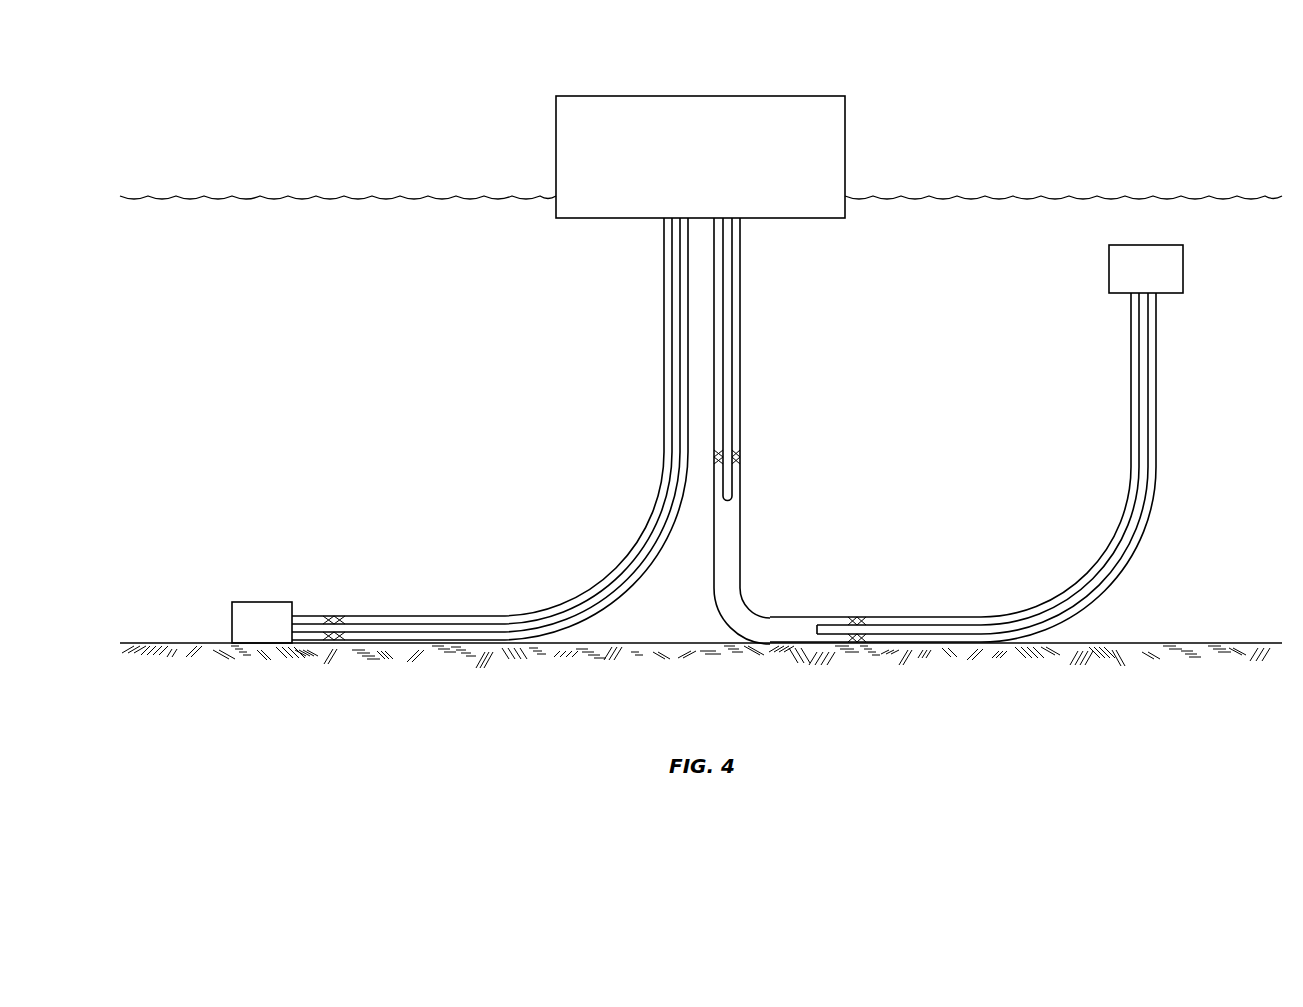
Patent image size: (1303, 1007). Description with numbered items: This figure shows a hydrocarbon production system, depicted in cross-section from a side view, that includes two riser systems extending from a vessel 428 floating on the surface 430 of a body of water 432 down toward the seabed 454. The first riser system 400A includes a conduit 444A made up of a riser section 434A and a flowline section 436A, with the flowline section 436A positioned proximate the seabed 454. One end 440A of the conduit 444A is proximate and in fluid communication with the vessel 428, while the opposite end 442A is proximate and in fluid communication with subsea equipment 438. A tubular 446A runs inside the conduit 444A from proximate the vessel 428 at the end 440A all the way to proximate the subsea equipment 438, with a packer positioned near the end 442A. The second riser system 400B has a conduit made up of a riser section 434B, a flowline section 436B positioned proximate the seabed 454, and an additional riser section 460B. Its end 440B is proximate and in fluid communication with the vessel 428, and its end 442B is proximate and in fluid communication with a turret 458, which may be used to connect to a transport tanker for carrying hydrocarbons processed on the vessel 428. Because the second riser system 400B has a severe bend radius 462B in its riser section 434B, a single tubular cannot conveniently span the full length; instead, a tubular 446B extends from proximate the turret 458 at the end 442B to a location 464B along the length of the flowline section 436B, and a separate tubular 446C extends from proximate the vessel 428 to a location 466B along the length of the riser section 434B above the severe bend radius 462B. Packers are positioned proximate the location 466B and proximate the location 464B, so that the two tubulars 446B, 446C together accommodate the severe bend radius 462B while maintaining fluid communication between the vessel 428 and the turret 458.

The vessel 428 is at (557, 104).
The surface 430 is at (338, 194).
The body of water 432 is at (284, 312).
The seabed 454 is at (682, 703).
The first riser system 400A is at (459, 419).
The second riser system 400B is at (893, 449).
The riser section 434A is at (630, 403).
The riser section 434B is at (774, 403).
The end 440A is at (662, 220).
The end 440B is at (741, 220).
The conduit 444A is at (664, 328).
The tubular 446A is at (672, 293).
The tubular 446B is at (1148, 370).
The tubular 446C is at (732, 293).
The flowline section 436A is at (403, 603).
The flowline section 436B is at (915, 603).
The end 442A is at (294, 614).
The end 442B is at (1160, 296).
The subsea equipment 438 is at (232, 616).
The turret 458 is at (1108, 256).
The additional riser section 460B is at (1147, 388).
The severe bend radius 462B is at (758, 603).
The location 464B is at (843, 632).
The location 466B is at (782, 389).